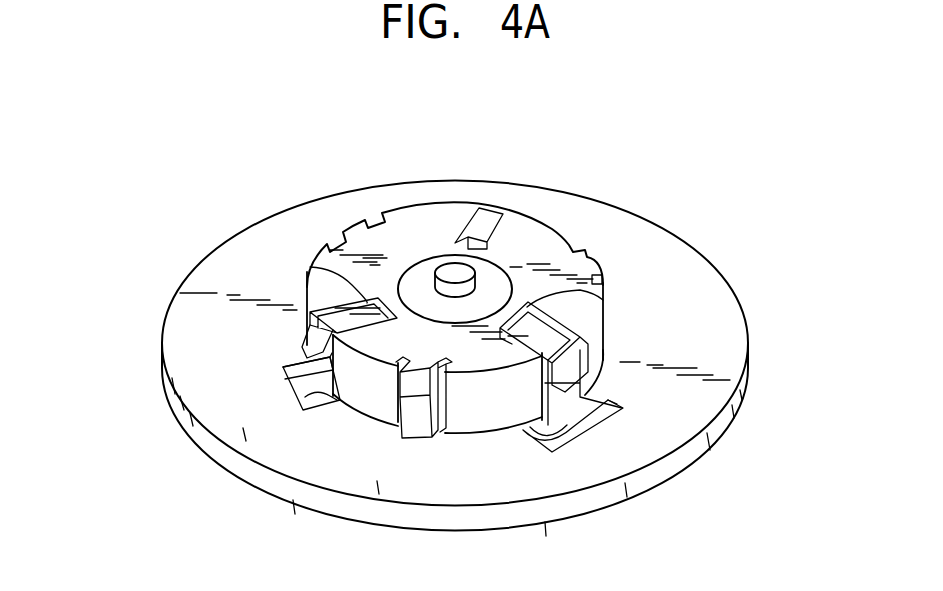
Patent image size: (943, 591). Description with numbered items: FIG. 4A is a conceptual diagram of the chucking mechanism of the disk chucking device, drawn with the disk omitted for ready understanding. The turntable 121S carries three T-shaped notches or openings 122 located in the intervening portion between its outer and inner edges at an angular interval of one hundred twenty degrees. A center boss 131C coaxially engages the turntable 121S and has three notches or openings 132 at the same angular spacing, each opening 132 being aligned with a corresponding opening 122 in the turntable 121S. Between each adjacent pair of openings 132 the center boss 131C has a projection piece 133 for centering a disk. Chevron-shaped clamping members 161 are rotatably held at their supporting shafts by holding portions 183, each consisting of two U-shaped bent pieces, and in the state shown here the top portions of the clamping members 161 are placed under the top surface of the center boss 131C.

The turntable 121S is at (297, 233).
The center boss 131C is at (410, 217).
The notches (or openings) 132 is at (307, 271).
The clamping members 161 is at (490, 217).
The T-shaped notches (or openings) 122 is at (294, 367).
The holding portions 183 is at (298, 392).
The projection pieces 133 is at (417, 427).